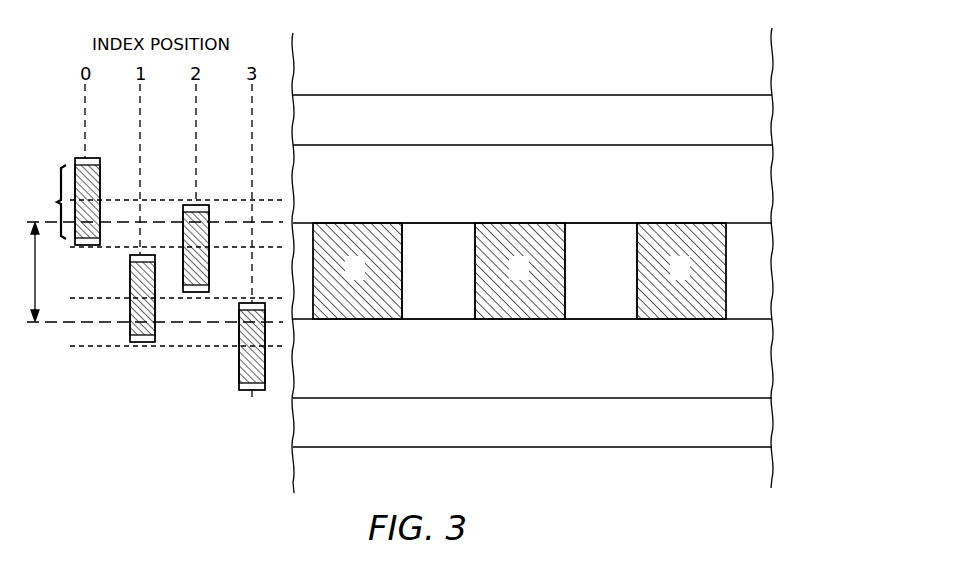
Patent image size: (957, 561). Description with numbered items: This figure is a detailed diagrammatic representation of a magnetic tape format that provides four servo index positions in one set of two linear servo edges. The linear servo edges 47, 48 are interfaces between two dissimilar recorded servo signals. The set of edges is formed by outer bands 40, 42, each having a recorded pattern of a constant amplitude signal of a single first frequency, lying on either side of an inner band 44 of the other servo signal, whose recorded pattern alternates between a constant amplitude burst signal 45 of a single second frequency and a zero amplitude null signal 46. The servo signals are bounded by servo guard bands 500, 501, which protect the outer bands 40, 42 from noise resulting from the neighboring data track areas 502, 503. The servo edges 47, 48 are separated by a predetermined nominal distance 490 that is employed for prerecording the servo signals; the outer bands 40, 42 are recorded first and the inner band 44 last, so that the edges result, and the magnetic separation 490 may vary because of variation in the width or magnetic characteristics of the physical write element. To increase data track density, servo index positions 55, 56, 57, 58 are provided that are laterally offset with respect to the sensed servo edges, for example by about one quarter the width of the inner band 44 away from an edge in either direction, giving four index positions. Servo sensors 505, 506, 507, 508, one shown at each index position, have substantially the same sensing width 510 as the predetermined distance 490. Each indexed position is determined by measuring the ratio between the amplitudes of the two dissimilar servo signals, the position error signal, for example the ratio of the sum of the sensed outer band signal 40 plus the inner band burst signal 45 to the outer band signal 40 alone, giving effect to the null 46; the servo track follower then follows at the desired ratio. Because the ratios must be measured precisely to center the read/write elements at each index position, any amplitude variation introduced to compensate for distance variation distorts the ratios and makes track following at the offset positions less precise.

The servo sensor 505 is at (82, 158).
The servo sensor 506 is at (142, 346).
The servo sensor 507 is at (190, 205).
The servo sensor 508 is at (253, 390).
The sensing width 510 is at (41, 202).
The predetermined nominal distance 490 is at (150, 272).
The servo index position 55 is at (240, 200).
The servo index position 56 is at (108, 248).
The servo index position 57 is at (90, 298).
The servo index position 58 is at (203, 347).
The data track area 502 is at (772, 62).
The data track area 503 is at (772, 470).
The servo guard band 500 is at (772, 112).
The servo guard band 501 is at (772, 422).
The outer band 40 is at (772, 175).
The outer band 42 is at (772, 357).
The inner band 44 is at (561, 270).
The constant amplitude burst signal 45 is at (353, 223).
The zero amplitude null signal 46 is at (437, 319).
The linear servo edge 47 is at (601, 223).
The linear servo edge 48 is at (601, 319).